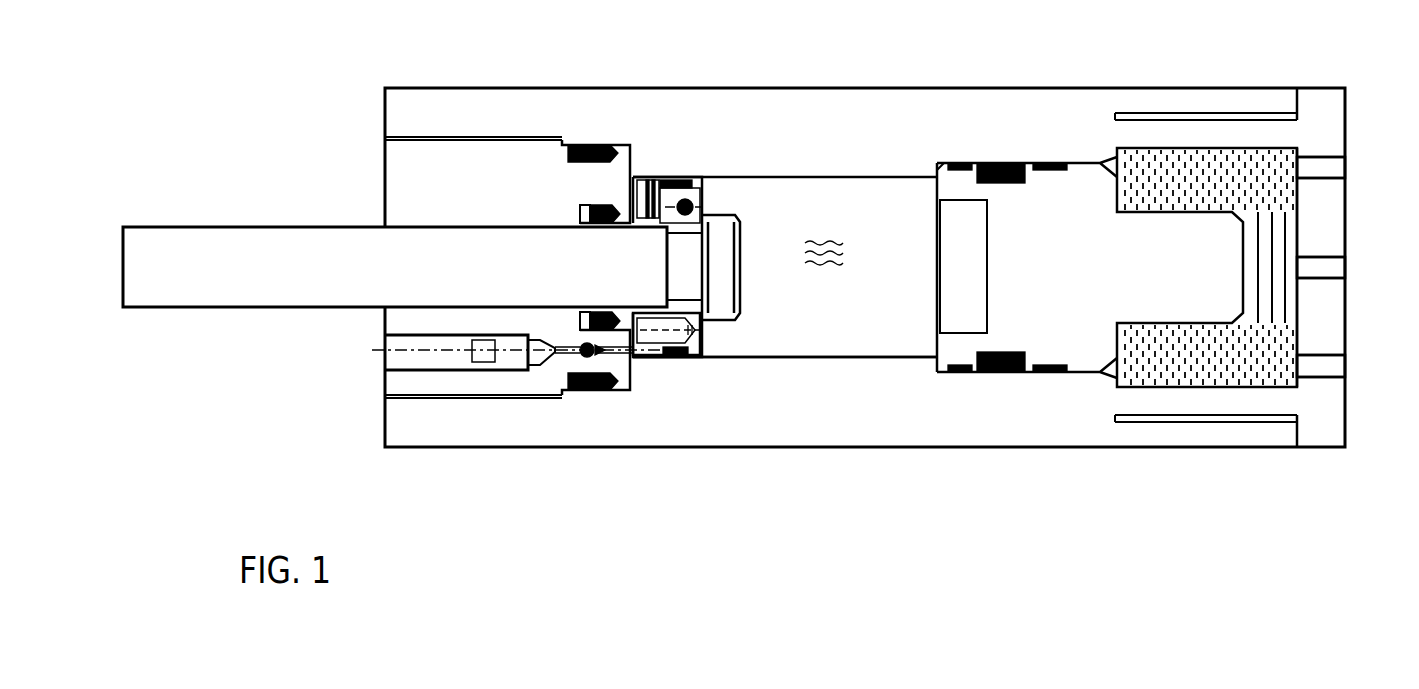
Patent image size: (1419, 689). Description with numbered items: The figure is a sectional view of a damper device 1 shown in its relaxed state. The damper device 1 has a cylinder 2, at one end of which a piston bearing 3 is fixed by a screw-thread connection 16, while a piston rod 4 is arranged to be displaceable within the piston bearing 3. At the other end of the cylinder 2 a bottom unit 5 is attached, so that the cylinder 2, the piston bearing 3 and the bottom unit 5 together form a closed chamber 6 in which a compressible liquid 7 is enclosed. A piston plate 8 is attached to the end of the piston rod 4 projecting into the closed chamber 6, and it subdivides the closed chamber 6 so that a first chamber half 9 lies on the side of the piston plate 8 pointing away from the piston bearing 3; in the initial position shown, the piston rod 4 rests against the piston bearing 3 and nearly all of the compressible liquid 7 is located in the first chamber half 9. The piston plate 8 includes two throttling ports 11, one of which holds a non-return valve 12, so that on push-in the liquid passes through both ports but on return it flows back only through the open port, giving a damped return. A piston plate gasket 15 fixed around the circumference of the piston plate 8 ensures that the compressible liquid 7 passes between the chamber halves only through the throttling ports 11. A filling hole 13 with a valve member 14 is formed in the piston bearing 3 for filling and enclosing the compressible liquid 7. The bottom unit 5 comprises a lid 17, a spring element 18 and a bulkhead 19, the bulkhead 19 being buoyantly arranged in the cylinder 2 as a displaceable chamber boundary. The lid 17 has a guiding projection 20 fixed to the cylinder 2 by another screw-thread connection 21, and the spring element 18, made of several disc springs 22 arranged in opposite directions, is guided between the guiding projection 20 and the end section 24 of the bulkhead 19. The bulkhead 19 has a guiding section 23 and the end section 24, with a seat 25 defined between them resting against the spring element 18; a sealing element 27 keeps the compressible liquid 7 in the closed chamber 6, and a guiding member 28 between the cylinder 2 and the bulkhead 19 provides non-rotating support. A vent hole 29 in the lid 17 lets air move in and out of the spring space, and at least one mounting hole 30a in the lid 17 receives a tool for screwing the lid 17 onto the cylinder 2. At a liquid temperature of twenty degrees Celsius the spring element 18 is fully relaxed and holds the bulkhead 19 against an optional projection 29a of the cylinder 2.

The damper device 1 is at (848, 62).
The cylinder 2 is at (1098, 274).
The piston bearing 3 is at (400, 192).
The piston rod 4 is at (243, 242).
The bottom unit 5 is at (1357, 190).
The closed chamber 6 is at (905, 357).
The compressible liquid 7 is at (810, 243).
The piston plate 8 is at (703, 188).
The first chamber half 9 is at (827, 325).
The throttling ports 11 is at (657, 333).
The non-return valve 12 is at (657, 180).
The filling hole 13 is at (465, 358).
The valve member 14 is at (582, 357).
The piston plate gasket 15 is at (680, 357).
The screw-thread connection 16 is at (483, 135).
The lid 17 is at (1263, 274).
The spring element 18 is at (1241, 357).
The bulkhead 19 is at (1077, 220).
The guiding projection 20 is at (1213, 130).
The screw-thread connection 21 is at (1268, 422).
The disc springs 22 is at (1297, 145).
The guiding section 23 is at (1093, 352).
The end section 24 is at (1183, 293).
The seat 25 is at (1140, 150).
The sealing element 27 is at (960, 163).
The guiding member 28 is at (1013, 163).
The vent hole 29 is at (1325, 267).
The projection 29a is at (937, 163).
The mounting hole 30a is at (1337, 363).